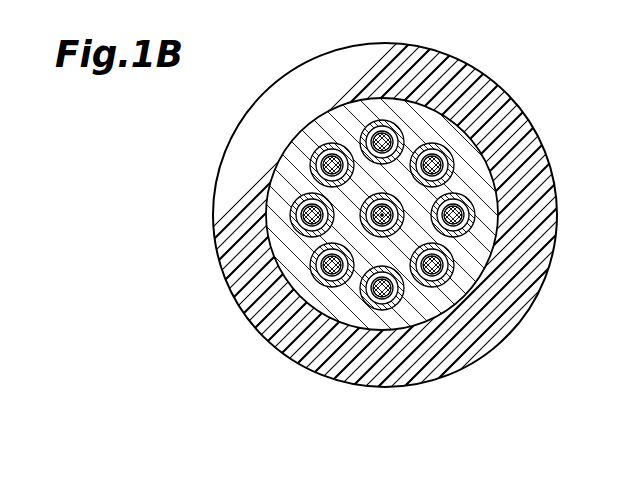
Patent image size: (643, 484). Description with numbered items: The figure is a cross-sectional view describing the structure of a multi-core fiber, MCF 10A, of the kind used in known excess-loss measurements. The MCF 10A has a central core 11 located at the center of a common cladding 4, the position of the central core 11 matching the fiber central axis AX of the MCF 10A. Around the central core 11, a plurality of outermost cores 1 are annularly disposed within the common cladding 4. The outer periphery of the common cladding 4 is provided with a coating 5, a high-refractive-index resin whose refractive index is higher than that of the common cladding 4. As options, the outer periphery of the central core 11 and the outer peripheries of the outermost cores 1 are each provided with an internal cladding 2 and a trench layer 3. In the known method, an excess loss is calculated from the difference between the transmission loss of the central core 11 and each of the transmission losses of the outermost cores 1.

The MCF 10A is at (515, 47).
The outermost cores 1 is at (388, 122).
The internal cladding 2 is at (435, 141).
The trench layer 3 is at (463, 172).
The common cladding 4 is at (475, 137).
The coating 5 is at (520, 207).
The central core 11 is at (405, 222).
The fiber central axis AX is at (382, 218).